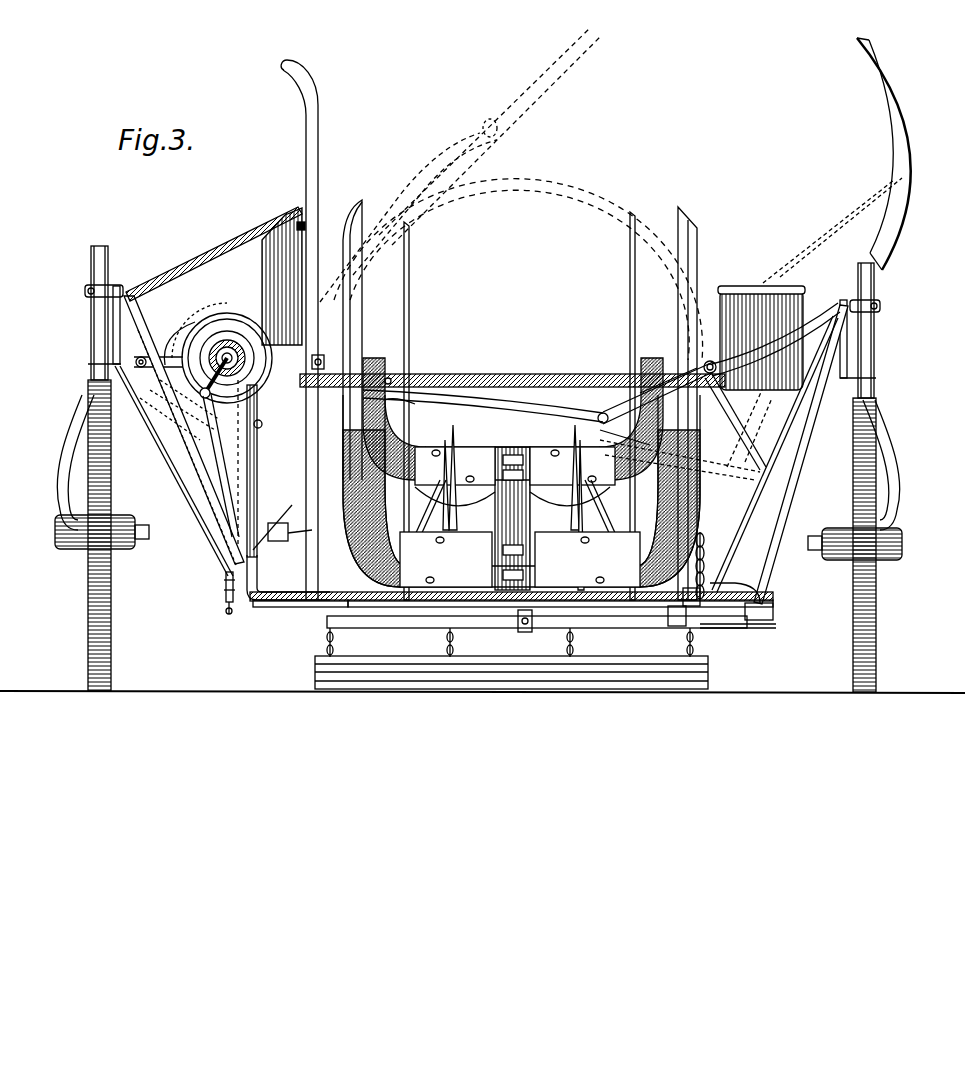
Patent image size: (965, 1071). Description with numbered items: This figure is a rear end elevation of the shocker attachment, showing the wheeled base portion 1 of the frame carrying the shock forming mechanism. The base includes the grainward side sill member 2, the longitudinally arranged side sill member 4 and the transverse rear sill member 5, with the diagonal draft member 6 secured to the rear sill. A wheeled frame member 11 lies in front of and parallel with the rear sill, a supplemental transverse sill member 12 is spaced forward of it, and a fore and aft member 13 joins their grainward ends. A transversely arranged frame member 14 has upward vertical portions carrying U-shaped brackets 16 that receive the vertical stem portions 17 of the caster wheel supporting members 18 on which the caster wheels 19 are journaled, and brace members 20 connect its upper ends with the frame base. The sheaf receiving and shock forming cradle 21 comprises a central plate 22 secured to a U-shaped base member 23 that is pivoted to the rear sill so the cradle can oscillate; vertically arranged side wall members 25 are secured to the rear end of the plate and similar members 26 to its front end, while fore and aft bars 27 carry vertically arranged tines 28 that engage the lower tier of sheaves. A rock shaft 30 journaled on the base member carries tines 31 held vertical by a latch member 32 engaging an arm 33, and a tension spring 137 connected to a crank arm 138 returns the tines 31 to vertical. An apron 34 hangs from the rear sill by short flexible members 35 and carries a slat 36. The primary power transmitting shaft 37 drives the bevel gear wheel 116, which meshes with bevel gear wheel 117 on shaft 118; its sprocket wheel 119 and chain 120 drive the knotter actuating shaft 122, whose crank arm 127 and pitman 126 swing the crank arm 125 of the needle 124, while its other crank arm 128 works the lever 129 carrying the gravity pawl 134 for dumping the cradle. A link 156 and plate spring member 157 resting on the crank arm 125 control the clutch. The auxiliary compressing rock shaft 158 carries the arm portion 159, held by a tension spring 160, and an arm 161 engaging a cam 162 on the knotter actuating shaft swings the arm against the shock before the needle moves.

The base portion of the wheeled frame 1 is at (775, 610).
The side sill member 2 is at (728, 592).
The longitudinally arranged side sill member 4 is at (258, 565).
The transverse rear sill member 5 is at (750, 624).
The draft member 6 is at (282, 609).
The wheeled frame member 11 is at (315, 607).
The supplemental transverse sill member 12 is at (215, 524).
The fore and aft member 13 is at (699, 345).
The transversely arranged frame member 14 is at (772, 522).
The U-shaped bracket 16 is at (112, 288).
The vertical stem portion 17 is at (113, 322).
The caster wheel supporting member 18 is at (60, 450).
The caster wheel 19 is at (89, 610).
The brace member 20 is at (135, 312).
The sheaf receiving and shock forming cradle 21 is at (444, 490).
The central plate 22 is at (496, 500).
The U-shaped base member 23 is at (672, 518).
The side wall member 25 is at (355, 462).
The side wall member 26 is at (390, 408).
The bar 27 is at (435, 500).
The tine 28 is at (460, 457).
The rock shaft 30 is at (390, 626).
The tine 31 is at (410, 318).
The latch member 32 is at (515, 627).
The arm 33 is at (532, 630).
The apron 34 is at (315, 670).
The short flexible member 35 is at (328, 640).
The slat 36 is at (708, 674).
The primary power transmitting shaft 37 is at (250, 503).
The bevel gear wheel 116 is at (286, 520).
The bevel gear wheel 117 is at (348, 527).
The shaft 118 is at (400, 553).
The sprocket wheel 119 is at (322, 480).
The chain 120 is at (240, 450).
The knotter actuating shaft 122 is at (212, 310).
The needle 124 is at (604, 207).
The crank arm 125 is at (730, 385).
The pitman 126 is at (570, 398).
The crank arm 127 is at (195, 318).
The crank arm 128 is at (160, 405).
The lever 129 is at (229, 614).
The gravity pawl 134 is at (226, 586).
The tension spring 137 is at (712, 548).
The crank arm 138 is at (688, 620).
The link 156 is at (600, 433).
The plate spring member 157 is at (522, 396).
The rock shaft 158 is at (324, 362).
The arm portion 159 is at (306, 150).
The tension spring 160 is at (208, 262).
The arm 161 is at (268, 300).
The cam 162 is at (162, 430).